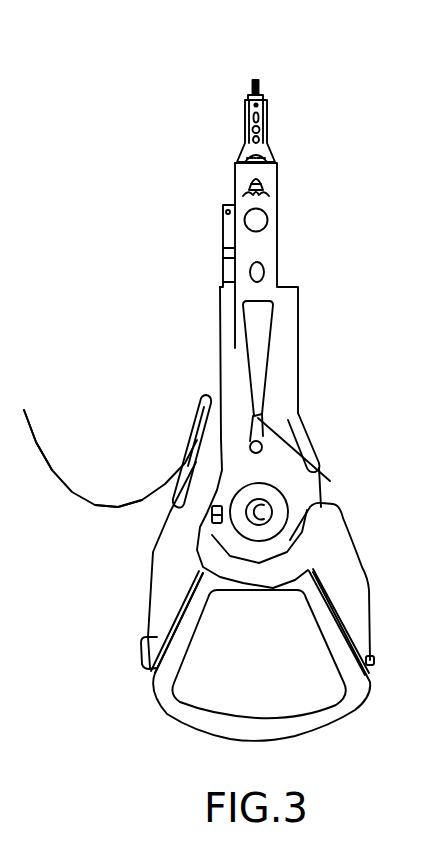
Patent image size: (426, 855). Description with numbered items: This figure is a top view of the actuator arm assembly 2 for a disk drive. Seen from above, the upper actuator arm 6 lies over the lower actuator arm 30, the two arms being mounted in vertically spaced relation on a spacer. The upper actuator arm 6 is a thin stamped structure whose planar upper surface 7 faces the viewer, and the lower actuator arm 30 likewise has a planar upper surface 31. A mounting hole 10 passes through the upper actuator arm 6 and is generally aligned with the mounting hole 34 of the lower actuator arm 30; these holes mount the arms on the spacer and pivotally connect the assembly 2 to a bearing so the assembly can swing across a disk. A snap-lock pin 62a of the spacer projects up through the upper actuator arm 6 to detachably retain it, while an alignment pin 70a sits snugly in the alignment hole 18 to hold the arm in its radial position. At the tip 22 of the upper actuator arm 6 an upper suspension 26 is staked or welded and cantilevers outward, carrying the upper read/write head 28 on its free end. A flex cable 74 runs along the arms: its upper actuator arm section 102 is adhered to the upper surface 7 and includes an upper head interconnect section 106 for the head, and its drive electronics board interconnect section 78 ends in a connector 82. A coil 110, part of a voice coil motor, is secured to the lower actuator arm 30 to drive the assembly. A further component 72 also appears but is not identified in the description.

The actuator arm assembly 2 is at (95, 214).
The upper actuator arm 6 is at (328, 505).
The planar upper surface 7 is at (297, 377).
The mounting hole 10 is at (208, 563).
The alignment hole 18 is at (303, 419).
The tip 22 is at (289, 288).
The upper suspension 26 is at (285, 131).
The upper read/write head 28 is at (280, 82).
The lower actuator arm 30 is at (274, 591).
The planar upper surface 31 is at (352, 593).
The mounting hole 34 is at (316, 496).
The snap-lock pin 62a is at (165, 529).
The alignment pin 70a is at (326, 448).
The link 72 is at (192, 424).
The flex cable 74 is at (110, 539).
The drive electronics board interconnect section 78 is at (118, 474).
The connector 82 is at (56, 421).
The upper actuator arm section 102 is at (285, 424).
The upper head interconnect section 106 is at (205, 221).
The coil 110 is at (276, 667).